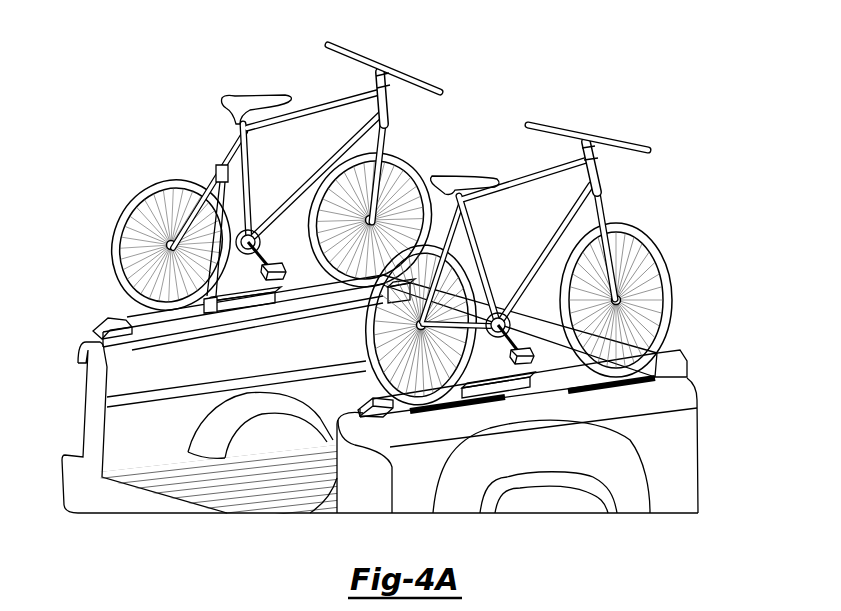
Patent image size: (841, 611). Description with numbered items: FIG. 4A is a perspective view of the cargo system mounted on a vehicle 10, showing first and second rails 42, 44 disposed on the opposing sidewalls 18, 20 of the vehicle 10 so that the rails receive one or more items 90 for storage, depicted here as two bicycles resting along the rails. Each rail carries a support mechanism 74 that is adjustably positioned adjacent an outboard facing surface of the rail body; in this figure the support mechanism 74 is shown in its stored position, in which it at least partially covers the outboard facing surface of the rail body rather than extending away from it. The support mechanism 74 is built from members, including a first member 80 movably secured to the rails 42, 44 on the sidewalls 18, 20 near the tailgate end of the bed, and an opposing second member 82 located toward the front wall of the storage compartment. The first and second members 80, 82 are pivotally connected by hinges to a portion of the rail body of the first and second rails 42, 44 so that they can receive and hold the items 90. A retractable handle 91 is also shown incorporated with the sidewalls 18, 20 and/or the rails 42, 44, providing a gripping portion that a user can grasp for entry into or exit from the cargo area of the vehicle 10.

The vehicle 10 is at (387, 347).
The sidewall 18 is at (92, 413).
The sidewall 20 is at (330, 483).
The first rail 42 is at (102, 318).
The second rail 44 is at (357, 402).
The support mechanism 74 is at (303, 290).
The first member 80 is at (473, 408).
The second member 82 is at (627, 390).
The items 90 is at (415, 167).
The retractable handle 91 is at (215, 175).